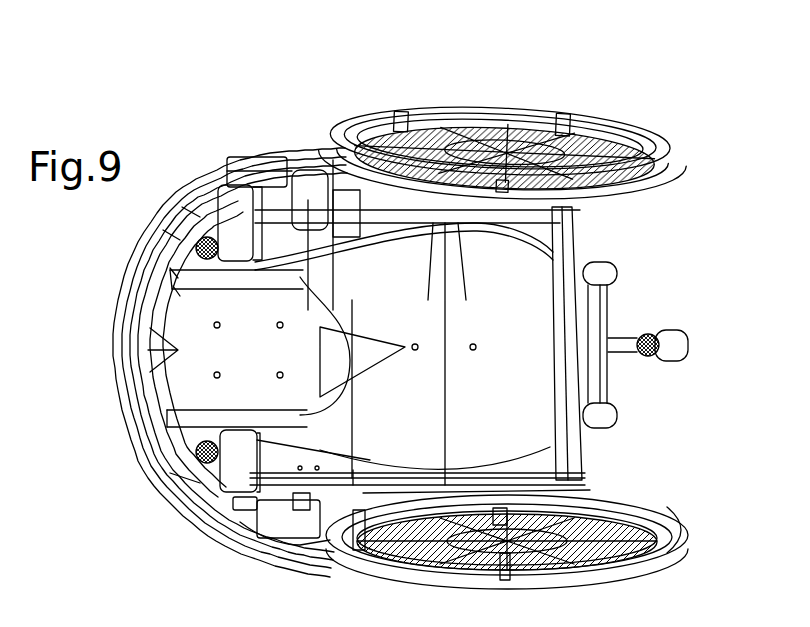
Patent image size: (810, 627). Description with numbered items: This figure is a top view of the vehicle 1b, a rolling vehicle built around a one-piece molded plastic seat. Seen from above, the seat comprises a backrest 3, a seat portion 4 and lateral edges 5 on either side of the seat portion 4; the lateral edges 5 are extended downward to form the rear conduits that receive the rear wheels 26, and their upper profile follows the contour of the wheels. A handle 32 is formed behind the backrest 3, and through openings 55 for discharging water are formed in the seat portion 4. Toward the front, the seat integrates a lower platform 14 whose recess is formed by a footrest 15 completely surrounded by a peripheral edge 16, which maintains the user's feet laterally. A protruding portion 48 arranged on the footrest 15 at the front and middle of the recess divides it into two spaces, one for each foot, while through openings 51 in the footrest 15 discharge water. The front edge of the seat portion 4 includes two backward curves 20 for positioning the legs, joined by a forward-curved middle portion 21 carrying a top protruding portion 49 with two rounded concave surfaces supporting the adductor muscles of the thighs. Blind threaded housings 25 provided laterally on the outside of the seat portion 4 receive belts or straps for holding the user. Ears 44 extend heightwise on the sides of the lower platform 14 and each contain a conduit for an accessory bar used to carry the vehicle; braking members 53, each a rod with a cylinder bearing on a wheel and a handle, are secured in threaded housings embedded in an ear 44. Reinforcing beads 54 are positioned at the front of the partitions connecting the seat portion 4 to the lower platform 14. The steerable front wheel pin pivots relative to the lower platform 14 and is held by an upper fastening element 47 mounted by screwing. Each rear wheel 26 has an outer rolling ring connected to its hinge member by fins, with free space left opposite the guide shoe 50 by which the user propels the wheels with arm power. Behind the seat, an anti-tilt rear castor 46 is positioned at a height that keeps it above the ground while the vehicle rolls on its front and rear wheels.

The vehicle 1b is at (707, 59).
The backrest 3 is at (570, 258).
The seat portion 4 is at (488, 375).
The lateral edges 5 is at (530, 195).
The lower platform 14 is at (210, 487).
The footrest 15 is at (173, 291).
The peripheral edge 16 is at (170, 273).
The backward curves 20 is at (200, 412).
The middle portion 21 is at (287, 350).
The blind threaded housings 25 is at (352, 340).
The rear wheels 26 is at (683, 533).
The handle 32 is at (608, 312).
The ears 44 is at (240, 163).
The anti-tilt rear castor 46 is at (680, 357).
The upper fastening element 47 is at (160, 472).
The protruding portion 48 is at (160, 339).
The top protruding portion 49 is at (340, 335).
The guide shoe 50 is at (665, 562).
The through openings 51 is at (205, 322).
The braking members 53 is at (313, 533).
The reinforcing beads 54 is at (225, 483).
The through openings 55 is at (472, 343).